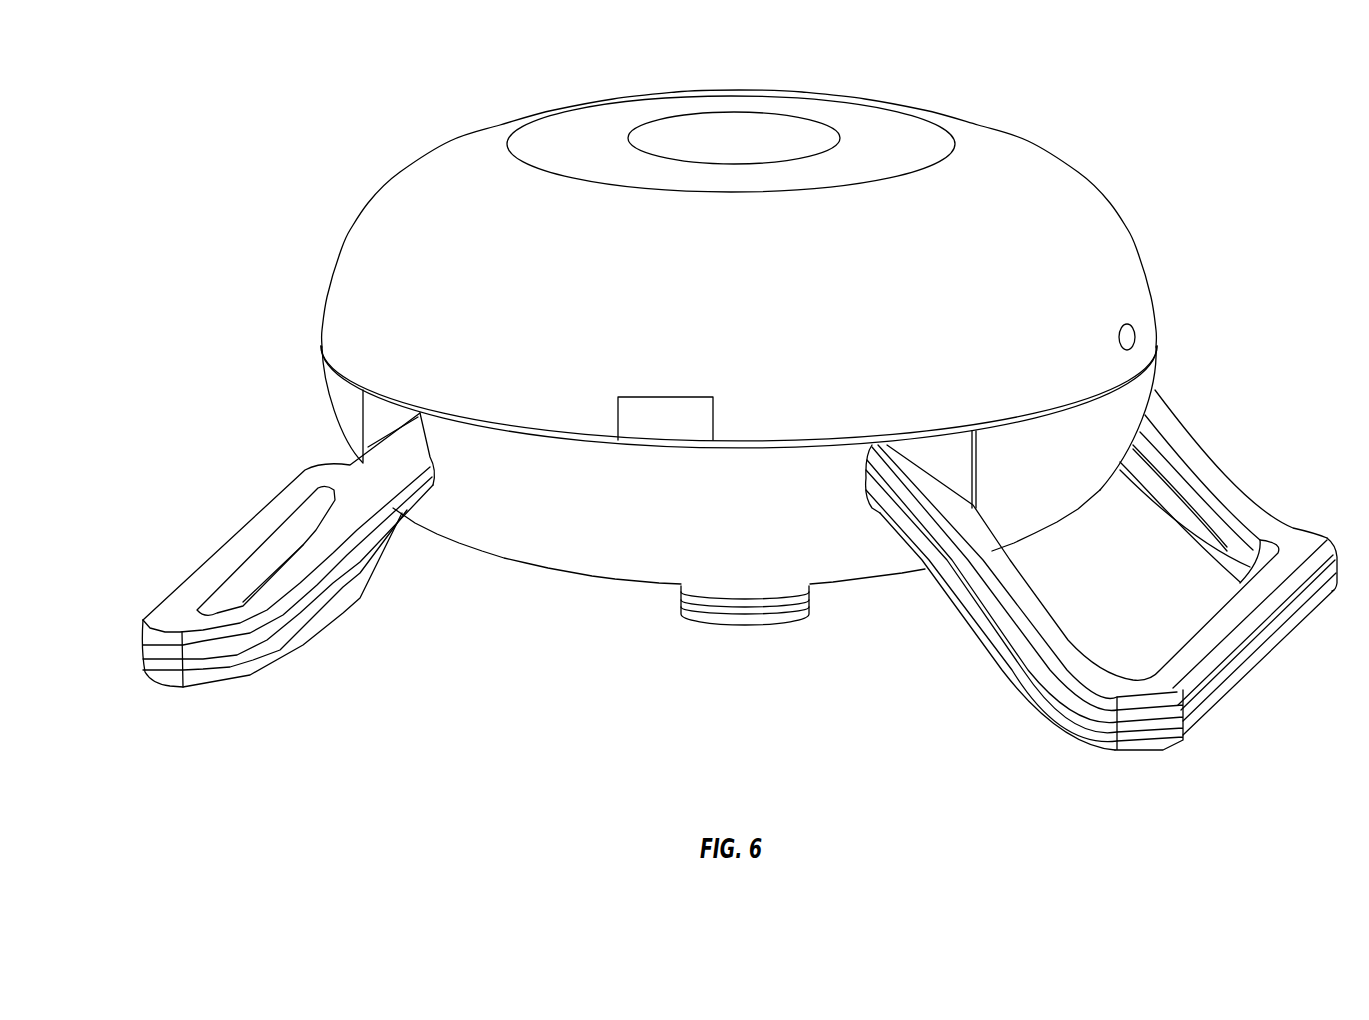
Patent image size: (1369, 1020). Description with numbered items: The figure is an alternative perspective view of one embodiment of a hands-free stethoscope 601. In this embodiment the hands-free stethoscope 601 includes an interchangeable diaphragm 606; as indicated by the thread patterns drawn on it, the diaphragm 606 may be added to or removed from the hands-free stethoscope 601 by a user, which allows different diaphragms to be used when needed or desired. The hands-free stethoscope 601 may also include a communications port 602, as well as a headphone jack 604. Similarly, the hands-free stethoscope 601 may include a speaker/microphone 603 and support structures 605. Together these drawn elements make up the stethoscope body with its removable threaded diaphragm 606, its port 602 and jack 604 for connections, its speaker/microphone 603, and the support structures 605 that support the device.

The hands-free stethoscope 601 is at (1025, 158).
The communications port 602 is at (476, 321).
The speaker/microphone 603 is at (747, 128).
The headphone jack 604 is at (1136, 337).
The support structures 605 is at (1218, 492).
The interchangeable diaphragm 606 is at (768, 623).